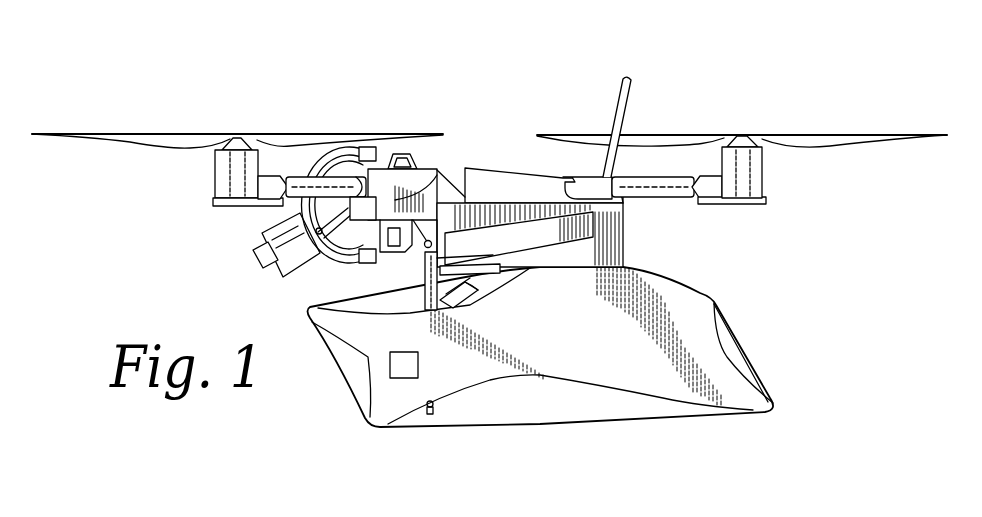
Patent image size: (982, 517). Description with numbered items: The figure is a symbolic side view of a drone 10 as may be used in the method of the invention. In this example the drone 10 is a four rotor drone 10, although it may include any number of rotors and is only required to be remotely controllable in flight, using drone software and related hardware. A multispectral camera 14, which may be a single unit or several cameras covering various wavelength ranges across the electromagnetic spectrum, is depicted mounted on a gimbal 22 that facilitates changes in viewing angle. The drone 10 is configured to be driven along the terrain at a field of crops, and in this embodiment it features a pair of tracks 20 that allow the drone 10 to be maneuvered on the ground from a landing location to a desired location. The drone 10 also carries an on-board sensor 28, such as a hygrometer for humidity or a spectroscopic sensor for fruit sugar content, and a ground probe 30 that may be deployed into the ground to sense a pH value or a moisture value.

The drone 10 is at (460, 86).
The multispectral camera 14 is at (262, 258).
The tracks 20 is at (745, 348).
The gimbal 22 is at (330, 158).
The on-board sensor 28 is at (616, 96).
The ground probe 30 is at (434, 413).